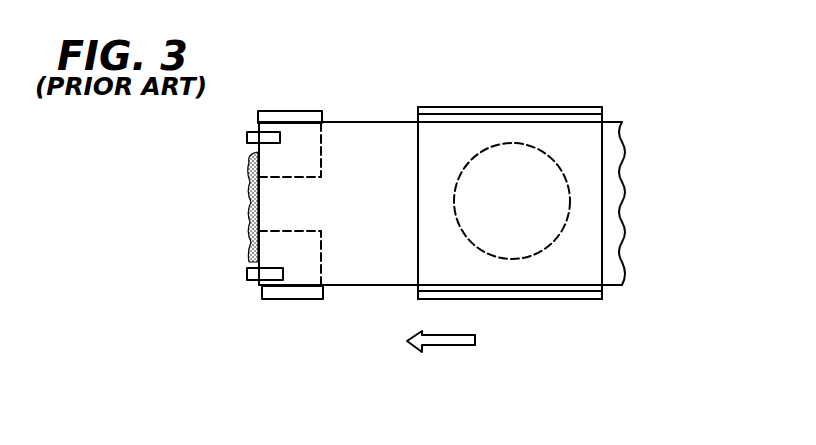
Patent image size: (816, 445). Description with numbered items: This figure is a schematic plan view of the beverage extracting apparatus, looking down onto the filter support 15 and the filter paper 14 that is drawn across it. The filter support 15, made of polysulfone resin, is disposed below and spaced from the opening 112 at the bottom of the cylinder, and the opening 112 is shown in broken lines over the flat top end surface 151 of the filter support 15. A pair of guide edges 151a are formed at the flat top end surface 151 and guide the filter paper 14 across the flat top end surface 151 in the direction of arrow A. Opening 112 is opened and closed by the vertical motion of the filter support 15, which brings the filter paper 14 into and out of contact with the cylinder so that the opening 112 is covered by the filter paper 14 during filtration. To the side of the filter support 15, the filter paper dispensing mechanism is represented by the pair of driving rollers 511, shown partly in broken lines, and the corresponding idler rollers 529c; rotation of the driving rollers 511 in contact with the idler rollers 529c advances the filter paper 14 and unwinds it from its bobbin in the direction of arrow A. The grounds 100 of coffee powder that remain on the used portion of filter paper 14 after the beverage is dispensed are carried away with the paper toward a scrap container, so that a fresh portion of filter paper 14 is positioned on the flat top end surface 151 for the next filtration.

The filter paper 14 is at (370, 268).
The driving rollers 511 is at (312, 110).
The idler rollers 529c is at (247, 138).
The grounds of coffee powder 100 is at (250, 215).
The filter support 15 is at (590, 107).
The guide edges 151a is at (540, 107).
The flat top end surface 151 is at (588, 267).
The opening 112 is at (553, 164).
The arrow A is at (468, 345).